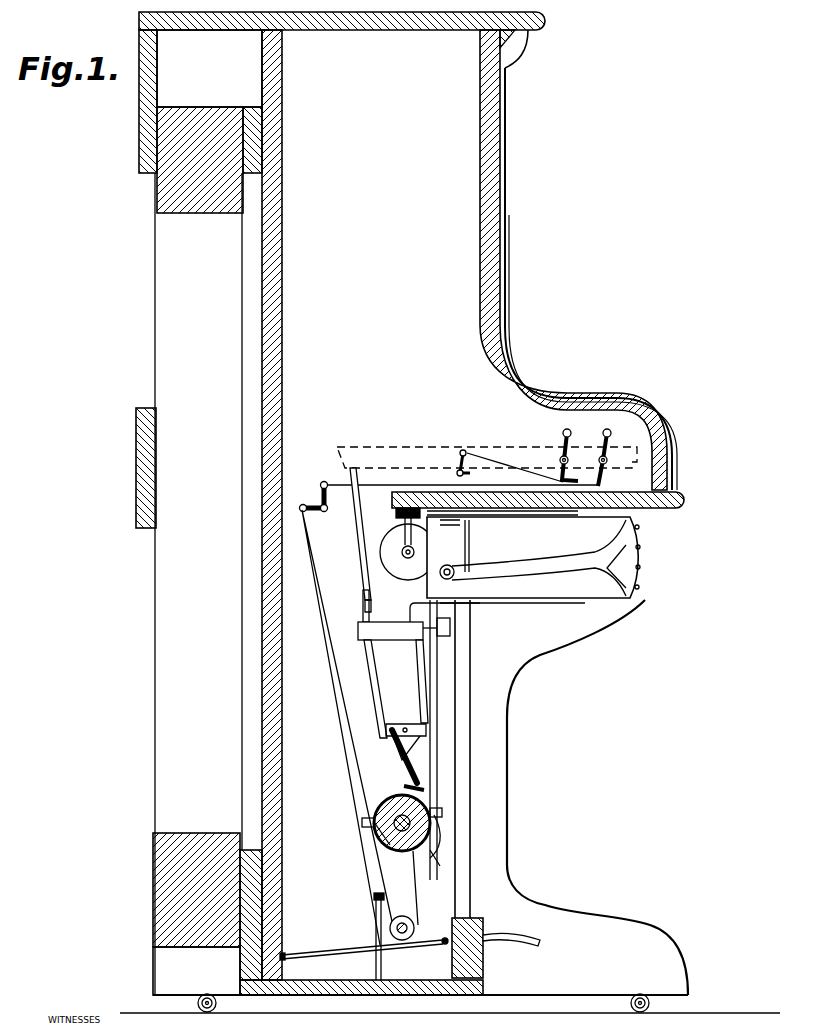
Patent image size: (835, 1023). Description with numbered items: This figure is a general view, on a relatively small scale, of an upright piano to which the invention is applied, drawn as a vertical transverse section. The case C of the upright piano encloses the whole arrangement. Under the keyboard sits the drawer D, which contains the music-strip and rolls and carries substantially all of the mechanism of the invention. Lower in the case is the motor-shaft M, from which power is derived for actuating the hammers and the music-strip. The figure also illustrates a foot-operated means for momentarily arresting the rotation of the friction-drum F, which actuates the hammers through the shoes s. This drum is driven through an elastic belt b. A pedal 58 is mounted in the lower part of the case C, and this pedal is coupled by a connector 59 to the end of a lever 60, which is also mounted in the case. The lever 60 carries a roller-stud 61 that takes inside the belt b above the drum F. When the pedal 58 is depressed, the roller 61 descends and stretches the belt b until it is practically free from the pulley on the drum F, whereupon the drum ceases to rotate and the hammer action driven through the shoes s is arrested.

The case C is at (505, 183).
The drawer D is at (533, 557).
The elastic belt b is at (386, 758).
The shoes s is at (414, 788).
The friction-drum F is at (386, 806).
The roller-stud 61 is at (420, 794).
The lever 60 is at (374, 822).
The connector 59 is at (440, 866).
The motor-shaft M is at (389, 926).
The pedal 58 is at (487, 937).